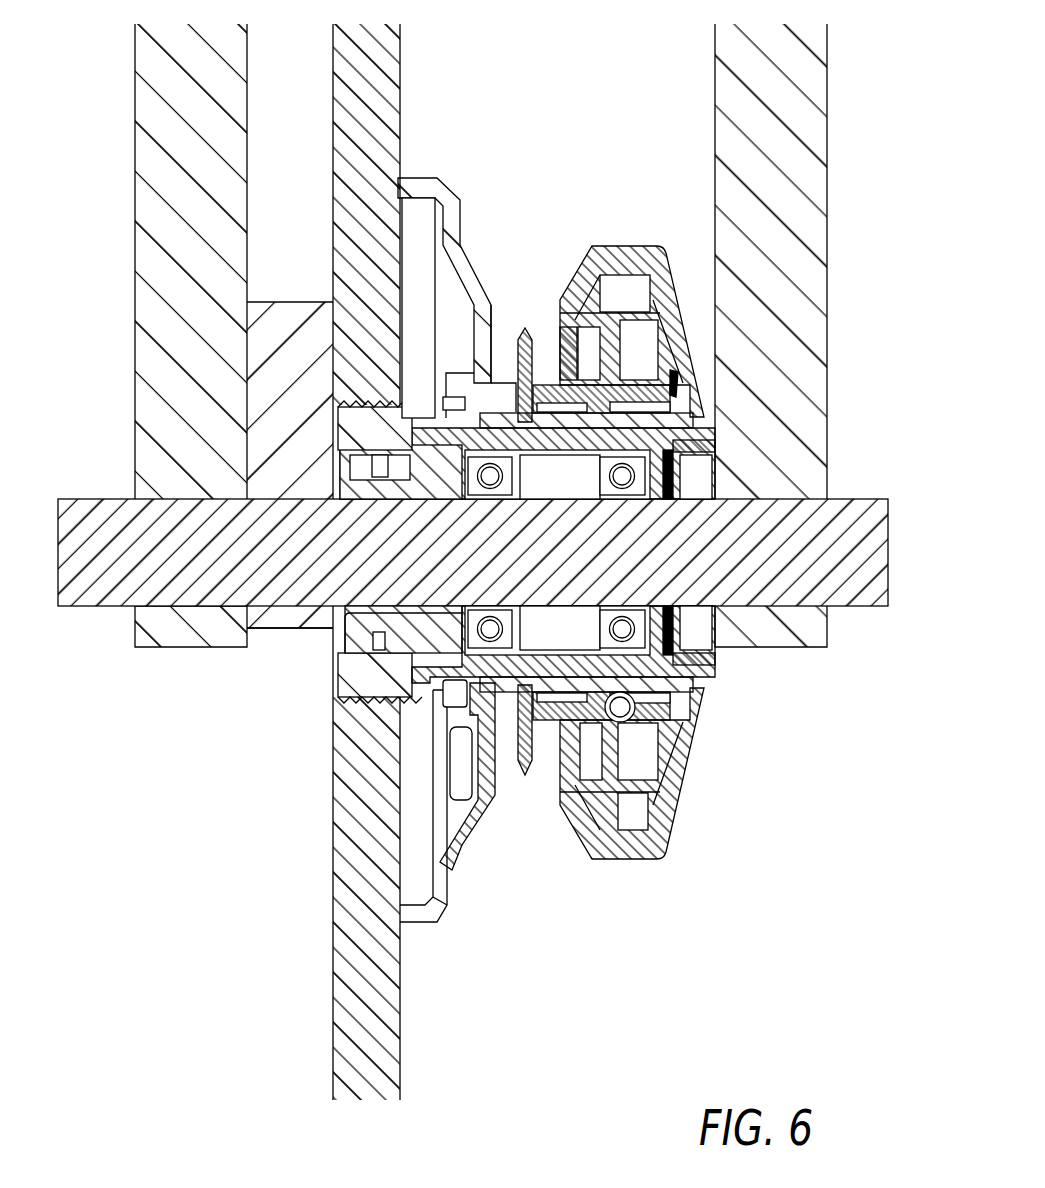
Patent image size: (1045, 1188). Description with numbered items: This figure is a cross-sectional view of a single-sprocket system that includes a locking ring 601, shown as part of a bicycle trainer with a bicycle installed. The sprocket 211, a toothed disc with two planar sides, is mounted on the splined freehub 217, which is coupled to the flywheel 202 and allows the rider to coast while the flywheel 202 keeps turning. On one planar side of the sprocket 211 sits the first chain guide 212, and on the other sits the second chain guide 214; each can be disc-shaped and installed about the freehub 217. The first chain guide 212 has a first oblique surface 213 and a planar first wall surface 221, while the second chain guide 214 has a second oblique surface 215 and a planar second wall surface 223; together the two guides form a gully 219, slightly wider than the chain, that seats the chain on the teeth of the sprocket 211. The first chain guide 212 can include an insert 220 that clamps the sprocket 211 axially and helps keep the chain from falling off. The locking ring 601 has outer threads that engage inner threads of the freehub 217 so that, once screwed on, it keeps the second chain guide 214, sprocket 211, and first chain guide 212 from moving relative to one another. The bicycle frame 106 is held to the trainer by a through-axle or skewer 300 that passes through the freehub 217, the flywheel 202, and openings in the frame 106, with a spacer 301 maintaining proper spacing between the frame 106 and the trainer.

The bicycle frame 106 is at (135, 228).
The flywheel 202 is at (400, 1050).
The sprocket 211 is at (524, 330).
The first chain guide 212 is at (635, 884).
The first oblique surface 213 is at (565, 822).
The second chain guide 214 is at (428, 178).
The second oblique surface 215 is at (482, 825).
The freehub 217 is at (345, 632).
The gully 219 is at (505, 345).
The insert 220 is at (552, 320).
The first wall surface 221 is at (532, 752).
The second wall surface 223 is at (492, 785).
The through-axle or skewer 300 is at (72, 607).
The spacer 301 is at (264, 630).
The locking ring 601 is at (715, 662).